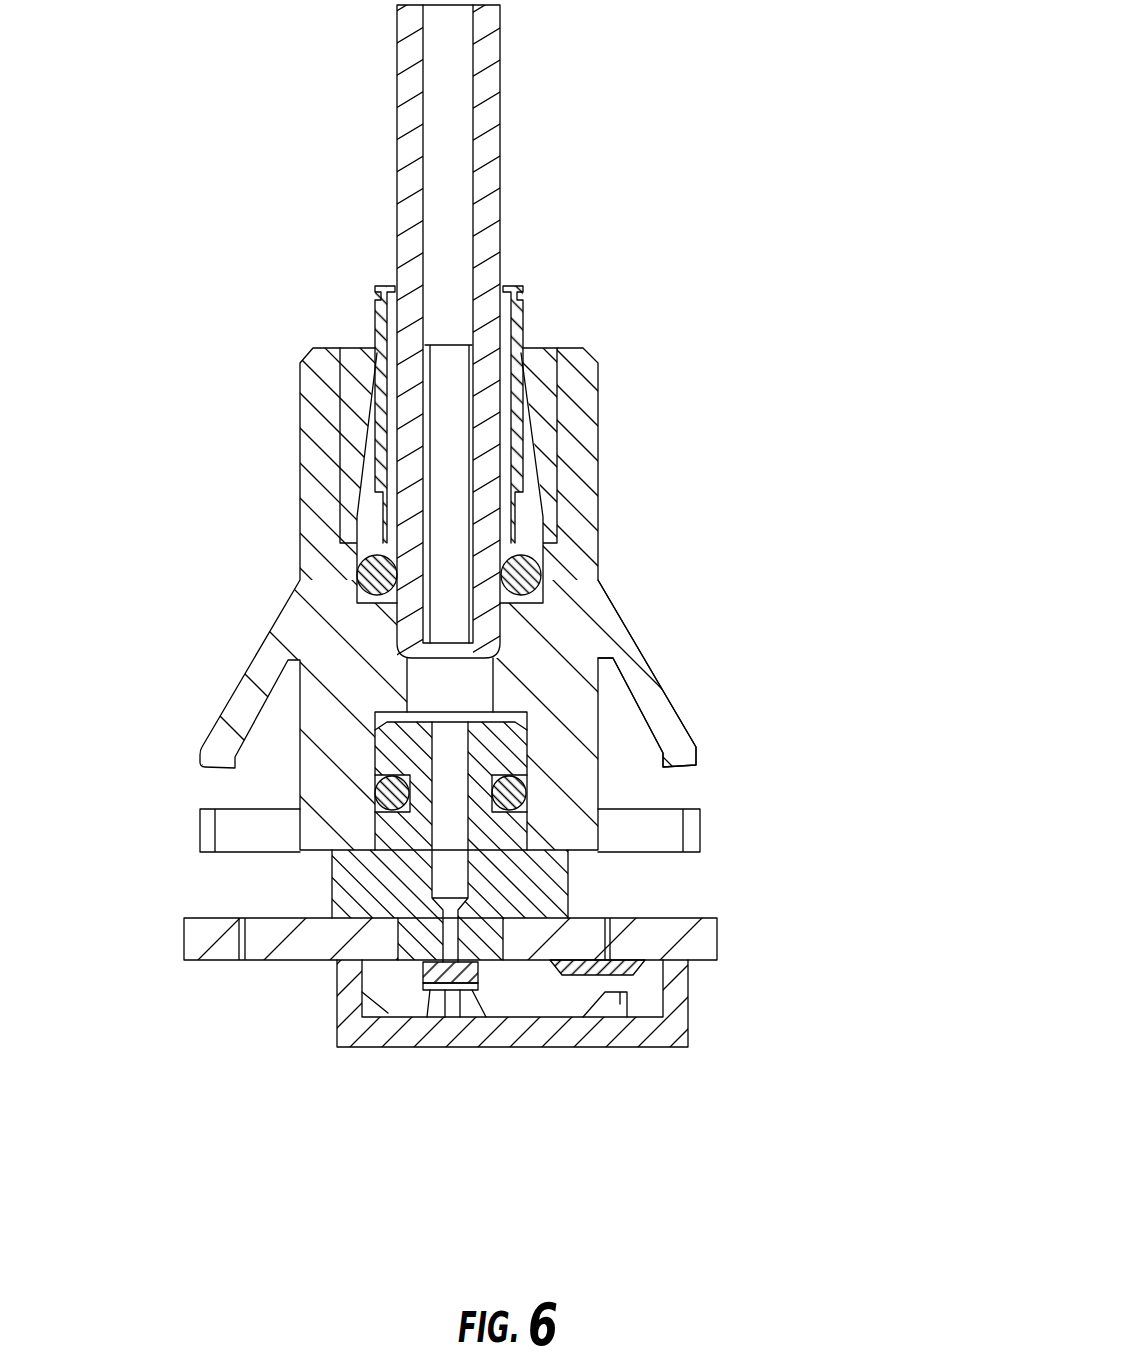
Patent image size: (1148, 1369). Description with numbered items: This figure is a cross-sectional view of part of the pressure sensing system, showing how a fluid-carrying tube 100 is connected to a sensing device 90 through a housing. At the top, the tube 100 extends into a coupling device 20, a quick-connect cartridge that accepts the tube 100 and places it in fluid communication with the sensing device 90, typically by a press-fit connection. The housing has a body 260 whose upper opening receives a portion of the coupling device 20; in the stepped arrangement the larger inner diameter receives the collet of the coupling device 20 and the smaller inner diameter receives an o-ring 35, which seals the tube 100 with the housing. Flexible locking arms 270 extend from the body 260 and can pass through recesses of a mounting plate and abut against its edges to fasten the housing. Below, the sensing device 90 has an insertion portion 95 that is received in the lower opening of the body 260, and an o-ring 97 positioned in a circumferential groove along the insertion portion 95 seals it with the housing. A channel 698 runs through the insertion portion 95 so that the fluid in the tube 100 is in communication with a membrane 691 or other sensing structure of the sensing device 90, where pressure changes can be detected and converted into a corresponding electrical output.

The tube 100 is at (490, 86).
The coupling device 20 is at (523, 323).
The body 260 is at (585, 468).
The locking arms 270 is at (647, 687).
The o-ring 35 is at (365, 573).
The insertion portion 95 is at (407, 733).
The o-ring 97 is at (530, 808).
The channel 698 is at (480, 863).
The membrane 691 is at (457, 965).
The sensing device 90 is at (653, 1033).